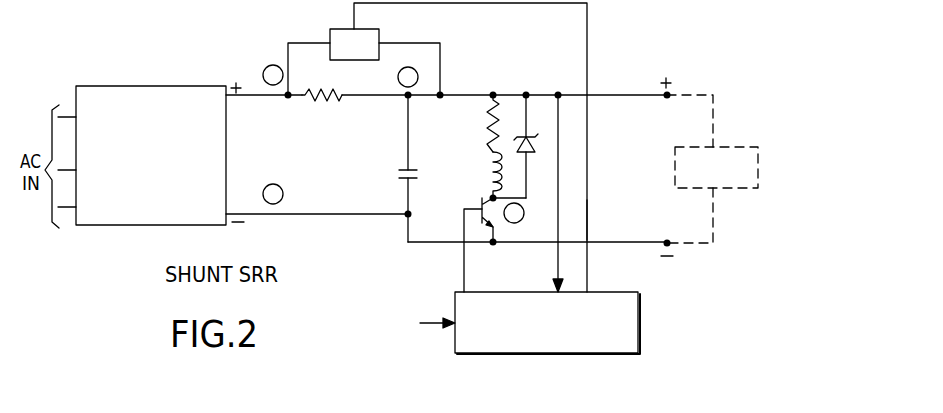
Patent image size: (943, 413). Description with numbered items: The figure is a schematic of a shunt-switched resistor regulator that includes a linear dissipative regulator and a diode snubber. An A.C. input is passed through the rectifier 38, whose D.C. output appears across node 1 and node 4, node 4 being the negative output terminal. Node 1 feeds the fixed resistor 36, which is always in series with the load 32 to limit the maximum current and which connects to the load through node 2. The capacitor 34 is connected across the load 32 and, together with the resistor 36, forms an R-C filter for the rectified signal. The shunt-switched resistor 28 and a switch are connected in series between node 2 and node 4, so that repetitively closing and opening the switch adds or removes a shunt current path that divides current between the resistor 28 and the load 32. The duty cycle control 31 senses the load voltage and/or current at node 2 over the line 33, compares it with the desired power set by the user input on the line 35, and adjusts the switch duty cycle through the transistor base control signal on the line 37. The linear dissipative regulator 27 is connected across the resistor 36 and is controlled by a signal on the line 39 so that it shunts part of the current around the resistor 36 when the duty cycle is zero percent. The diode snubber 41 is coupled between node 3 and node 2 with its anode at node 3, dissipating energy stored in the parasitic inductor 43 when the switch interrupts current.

The rectifier 38 is at (159, 86).
The linear dissipative regulator 27 is at (379, 34).
The fixed resistor 36 is at (341, 93).
The capacitor 34 is at (399, 174).
The shunt-switched resistor 28 is at (488, 133).
The parasitic inductor 43 is at (488, 167).
The diode snubber 41 is at (535, 155).
The transistor base control signal line 37 is at (464, 266).
The sensing line 33 is at (558, 214).
The LDR control line 39 is at (588, 222).
The duty cycle control circuit 31 is at (632, 292).
The user input signal line 35 is at (430, 322).
The load 32 is at (762, 131).
The node 1 is at (273, 75).
The node 2 is at (408, 77).
The node 3 is at (514, 213).
The node 4 is at (273, 194).